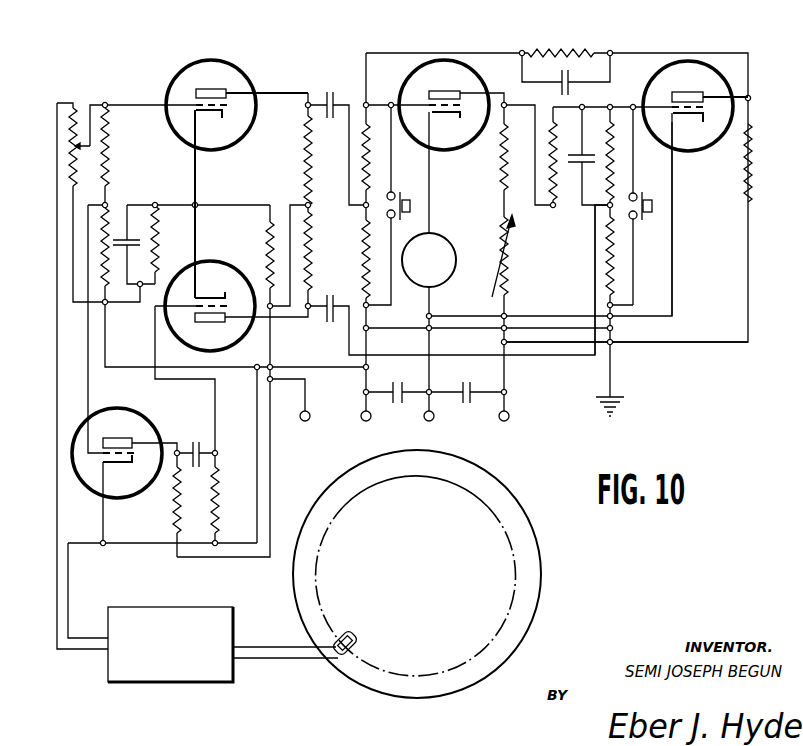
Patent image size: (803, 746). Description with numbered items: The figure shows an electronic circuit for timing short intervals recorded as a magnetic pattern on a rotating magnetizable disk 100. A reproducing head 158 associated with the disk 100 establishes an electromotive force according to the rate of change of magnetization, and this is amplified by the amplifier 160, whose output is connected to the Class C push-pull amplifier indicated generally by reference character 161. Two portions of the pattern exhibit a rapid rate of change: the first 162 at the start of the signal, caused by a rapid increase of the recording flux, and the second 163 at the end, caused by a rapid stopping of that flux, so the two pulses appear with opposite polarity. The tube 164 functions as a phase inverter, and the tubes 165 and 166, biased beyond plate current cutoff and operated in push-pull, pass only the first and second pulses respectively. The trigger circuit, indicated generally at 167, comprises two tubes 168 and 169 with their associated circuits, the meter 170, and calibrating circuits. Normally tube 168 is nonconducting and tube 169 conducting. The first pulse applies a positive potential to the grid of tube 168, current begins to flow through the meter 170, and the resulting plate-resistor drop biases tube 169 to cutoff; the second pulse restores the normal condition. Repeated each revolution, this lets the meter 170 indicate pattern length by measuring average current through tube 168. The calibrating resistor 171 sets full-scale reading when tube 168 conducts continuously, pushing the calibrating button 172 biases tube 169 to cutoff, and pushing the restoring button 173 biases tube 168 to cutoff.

The magnetizable disk 100 is at (543, 563).
The reproducing head 158 is at (345, 652).
The amplifier 160 is at (148, 685).
The Class C amplifier 161 is at (263, 173).
The first portion of magnetic pattern 162 is at (345, 505).
The second portion of magnetic pattern 163 is at (488, 507).
The phase inverter tube 164 is at (112, 498).
The tube 165 is at (187, 148).
The tube 166 is at (203, 263).
The trigger circuit 167 is at (561, 239).
The tube 168 is at (443, 150).
The tube 169 is at (692, 150).
The meter 170 is at (433, 235).
The calibrating resistor 171 is at (507, 283).
The calibrating button 172 is at (638, 192).
The restoring button 173 is at (397, 191).